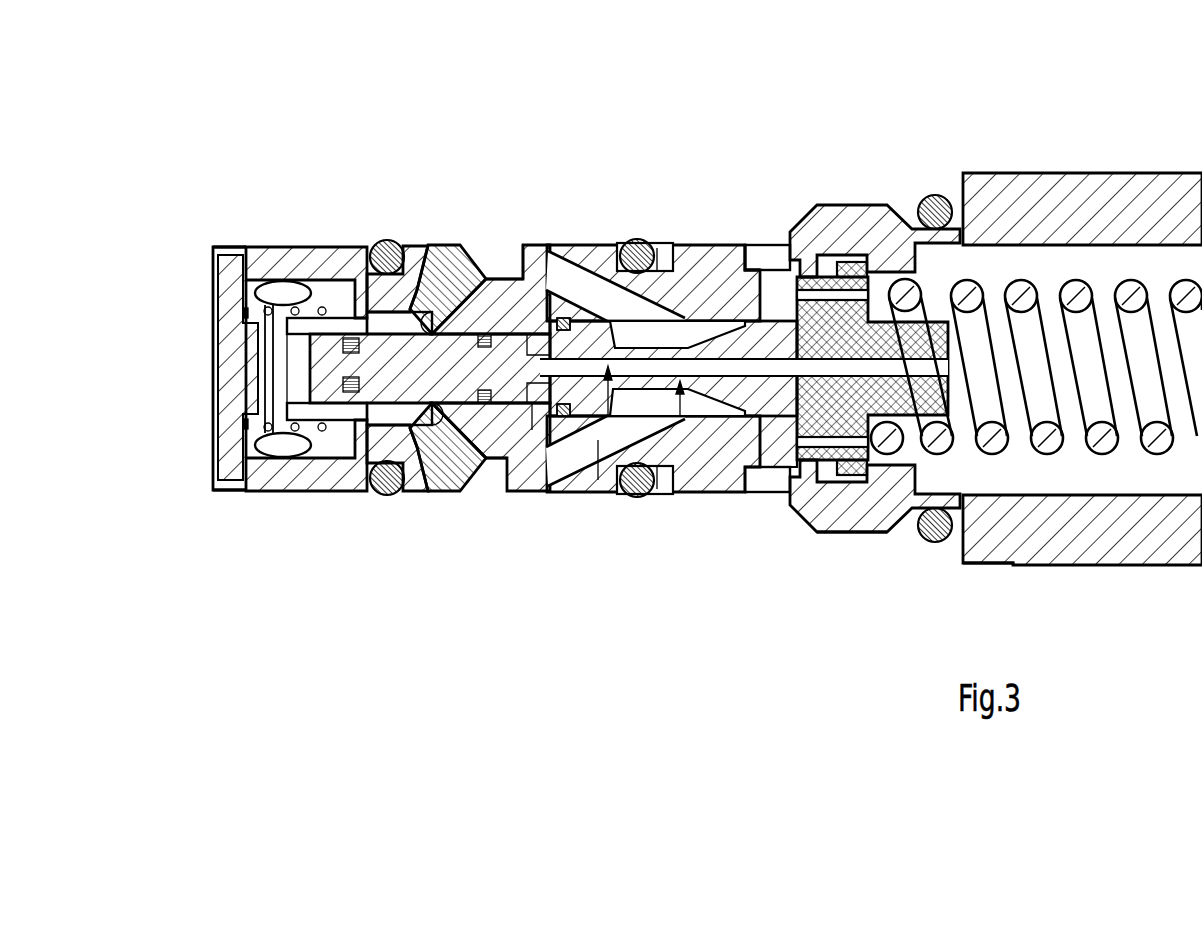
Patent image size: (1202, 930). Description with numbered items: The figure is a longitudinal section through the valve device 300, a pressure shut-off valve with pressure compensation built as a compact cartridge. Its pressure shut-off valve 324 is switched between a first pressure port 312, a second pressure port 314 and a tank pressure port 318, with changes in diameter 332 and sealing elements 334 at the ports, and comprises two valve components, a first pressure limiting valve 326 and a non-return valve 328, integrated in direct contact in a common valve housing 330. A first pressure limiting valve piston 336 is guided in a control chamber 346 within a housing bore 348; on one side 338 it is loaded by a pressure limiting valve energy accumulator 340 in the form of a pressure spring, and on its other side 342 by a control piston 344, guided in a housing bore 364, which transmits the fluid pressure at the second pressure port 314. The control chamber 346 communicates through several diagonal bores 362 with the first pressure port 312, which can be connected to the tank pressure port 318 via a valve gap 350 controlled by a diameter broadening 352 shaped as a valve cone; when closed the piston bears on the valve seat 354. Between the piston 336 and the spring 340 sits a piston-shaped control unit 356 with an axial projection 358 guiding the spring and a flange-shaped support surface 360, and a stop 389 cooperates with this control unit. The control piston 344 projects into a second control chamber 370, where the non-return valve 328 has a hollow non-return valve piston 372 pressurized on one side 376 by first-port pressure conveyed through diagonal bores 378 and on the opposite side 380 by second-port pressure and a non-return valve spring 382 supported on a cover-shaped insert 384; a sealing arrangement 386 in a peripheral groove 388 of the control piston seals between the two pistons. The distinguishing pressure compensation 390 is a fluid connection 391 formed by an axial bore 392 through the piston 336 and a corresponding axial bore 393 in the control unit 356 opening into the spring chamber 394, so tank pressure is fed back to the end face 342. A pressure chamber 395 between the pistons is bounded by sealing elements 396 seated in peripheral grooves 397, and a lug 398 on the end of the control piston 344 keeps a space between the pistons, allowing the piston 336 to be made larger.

The valve device 300 is at (1090, 132).
The first pressure port 312 is at (487, 240).
The second pressure port 314 is at (282, 240).
The tank pressure port 318 is at (773, 245).
The pressure shut-off valve 324 is at (672, 430).
The first pressure limiting valve 326 is at (779, 491).
The non-return valve 328 is at (322, 491).
The valve housing 330 is at (704, 456).
The change in diameter 332 is at (806, 228).
The sealing element 334 is at (392, 240).
The first pressure limiting valve piston 336 is at (740, 491).
The piston side 338 is at (834, 440).
The pressure limiting valve energy accumulator 340 is at (1162, 446).
The piston side 342 is at (540, 491).
The control piston 344 is at (502, 491).
The control chamber 346 is at (718, 330).
The housing bore 348 is at (600, 290).
The valve gap 350 is at (767, 389).
The diameter broadening 352 is at (777, 295).
The valve seat 354 is at (745, 262).
The piston-shaped control unit 356 is at (952, 340).
The axial projection 358 is at (908, 534).
The flange-shaped support surface 360 is at (885, 275).
The diagonal bores 362 is at (605, 260).
The housing bore 364 is at (437, 375).
The second control chamber 370 is at (744, 353).
The non-return valve piston 372 is at (316, 240).
The side 376 is at (421, 240).
The diagonal bores 378 is at (478, 240).
The opposite side 380 is at (238, 240).
The non-return valve spring 382 is at (247, 491).
The cover-shaped insert 384 is at (228, 391).
The sealing arrangement 386 is at (308, 385).
The peripheral groove 388 is at (325, 362).
The stop 389 is at (877, 491).
The pressure compensation 390 is at (599, 491).
The fluid connection 391 is at (693, 360).
The axial bore 392 is at (589, 372).
The axial bore 393 is at (970, 564).
The spring chamber 394 is at (1079, 478).
The pressure chamber 395 is at (531, 275).
The sealing element 396 is at (505, 290).
The peripheral grooves 397 is at (549, 300).
The lug 398 is at (532, 491).